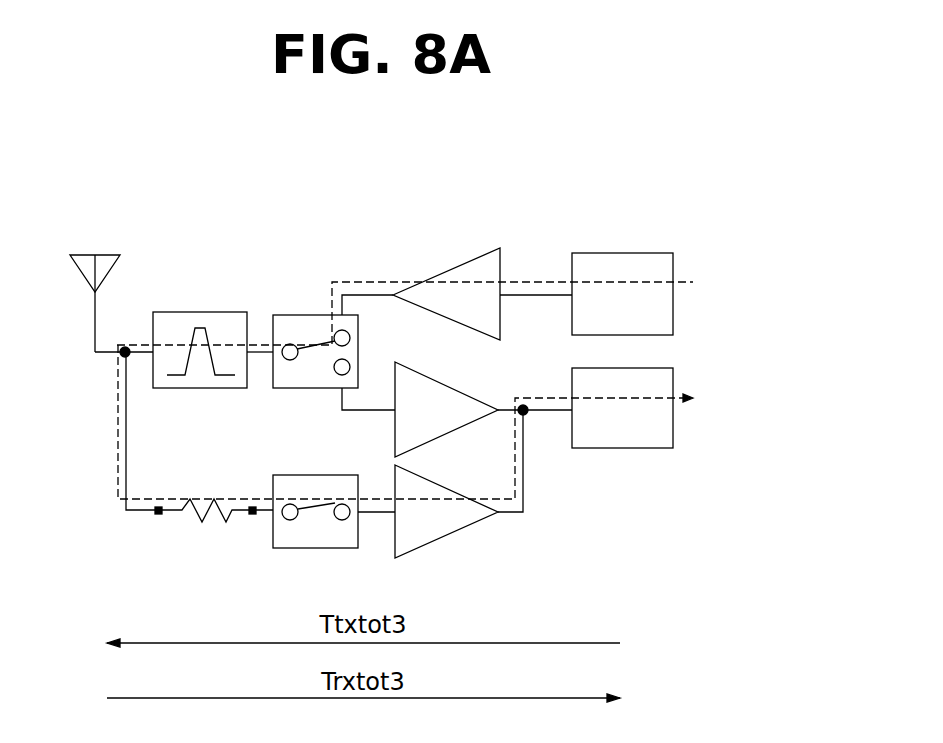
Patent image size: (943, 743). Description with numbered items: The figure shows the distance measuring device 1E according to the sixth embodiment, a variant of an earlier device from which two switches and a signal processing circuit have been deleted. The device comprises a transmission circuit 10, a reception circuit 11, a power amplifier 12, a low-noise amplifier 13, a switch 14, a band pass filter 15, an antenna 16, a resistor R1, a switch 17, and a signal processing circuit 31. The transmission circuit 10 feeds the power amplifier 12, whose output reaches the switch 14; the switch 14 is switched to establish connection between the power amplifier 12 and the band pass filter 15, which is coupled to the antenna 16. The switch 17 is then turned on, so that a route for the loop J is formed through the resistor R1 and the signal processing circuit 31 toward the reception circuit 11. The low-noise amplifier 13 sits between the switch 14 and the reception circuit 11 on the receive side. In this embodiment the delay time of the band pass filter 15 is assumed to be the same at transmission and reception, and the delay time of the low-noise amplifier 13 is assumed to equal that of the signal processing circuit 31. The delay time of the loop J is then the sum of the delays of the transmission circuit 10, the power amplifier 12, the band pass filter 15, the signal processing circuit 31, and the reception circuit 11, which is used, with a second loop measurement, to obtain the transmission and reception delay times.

The distance measuring device 1E is at (363, 182).
The antenna 16 is at (112, 255).
The band pass filter 15 is at (203, 312).
The switch 14 is at (320, 315).
The power amplifier 12 is at (452, 268).
The low-noise amplifier 13 is at (449, 386).
The signal processing circuit 31 is at (460, 490).
The switch 17 is at (320, 475).
The resistor R1 is at (199, 437).
The transmission circuit 10 is at (618, 253).
The reception circuit 11 is at (625, 452).
The loop J is at (545, 278).